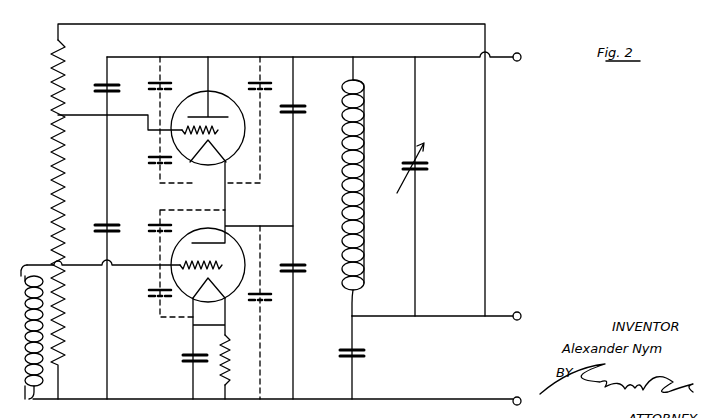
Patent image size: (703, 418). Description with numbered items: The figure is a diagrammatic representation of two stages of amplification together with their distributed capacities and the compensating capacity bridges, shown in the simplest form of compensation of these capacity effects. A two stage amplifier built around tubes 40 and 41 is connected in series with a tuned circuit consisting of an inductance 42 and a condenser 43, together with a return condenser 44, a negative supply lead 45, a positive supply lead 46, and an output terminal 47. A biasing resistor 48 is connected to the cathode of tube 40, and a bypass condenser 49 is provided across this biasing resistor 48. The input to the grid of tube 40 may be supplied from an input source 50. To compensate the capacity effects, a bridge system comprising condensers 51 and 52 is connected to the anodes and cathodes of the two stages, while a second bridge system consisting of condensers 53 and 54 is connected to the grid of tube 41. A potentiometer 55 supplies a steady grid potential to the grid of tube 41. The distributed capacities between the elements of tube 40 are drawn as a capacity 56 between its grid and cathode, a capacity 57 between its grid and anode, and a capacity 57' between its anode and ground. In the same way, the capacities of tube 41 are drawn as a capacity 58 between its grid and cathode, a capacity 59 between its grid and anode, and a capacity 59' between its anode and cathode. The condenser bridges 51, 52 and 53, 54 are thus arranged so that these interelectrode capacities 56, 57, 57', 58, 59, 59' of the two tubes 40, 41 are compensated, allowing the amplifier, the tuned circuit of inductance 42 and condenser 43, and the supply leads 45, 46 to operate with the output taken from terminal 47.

The tube 40 is at (230, 250).
The tube 41 is at (228, 150).
The inductance 42 is at (342, 170).
The condenser 43 is at (407, 157).
The return condenser 44 is at (338, 352).
The negative supply lead 45 is at (515, 396).
The positive supply lead 46 is at (517, 312).
The output terminal 47 is at (521, 59).
The biasing resistor 48 is at (232, 360).
The bypass condenser 49 is at (180, 359).
The input source 50 is at (32, 318).
The condenser 51 is at (278, 270).
The condenser 52 is at (292, 117).
The condenser 53 is at (94, 228).
The condenser 54 is at (94, 85).
The potentiometer 55 is at (44, 171).
The grid-cathode capacity 56 is at (152, 294).
The grid-anode capacity 57 is at (149, 220).
The anode-ground capacity 57' is at (252, 304).
The grid-cathode capacity 58 is at (152, 159).
The grid-anode capacity 59 is at (149, 77).
The anode-cathode capacity 59' is at (248, 76).